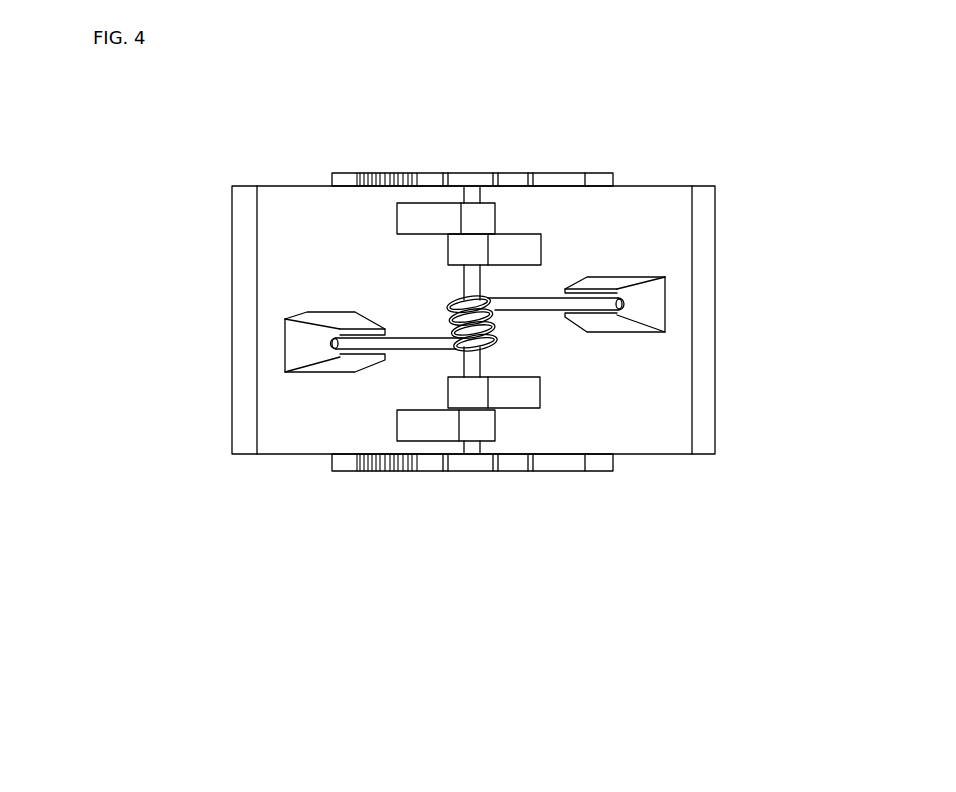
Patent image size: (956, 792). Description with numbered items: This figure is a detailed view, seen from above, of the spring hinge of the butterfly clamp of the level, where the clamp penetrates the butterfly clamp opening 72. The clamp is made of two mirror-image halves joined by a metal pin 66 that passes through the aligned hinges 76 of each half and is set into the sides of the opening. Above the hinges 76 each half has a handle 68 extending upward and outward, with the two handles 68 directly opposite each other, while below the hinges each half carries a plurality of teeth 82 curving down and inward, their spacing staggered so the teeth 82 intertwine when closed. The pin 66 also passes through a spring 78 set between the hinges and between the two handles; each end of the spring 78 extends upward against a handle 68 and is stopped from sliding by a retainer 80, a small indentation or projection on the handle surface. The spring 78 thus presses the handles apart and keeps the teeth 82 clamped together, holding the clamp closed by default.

The metal pin 66 is at (470, 358).
The handle 68 is at (638, 223).
The butterfly clamp opening 72 is at (560, 472).
The hinges 76 is at (508, 249).
The spring 78 is at (493, 332).
The retainer 80 is at (652, 293).
The teeth 82 is at (360, 173).